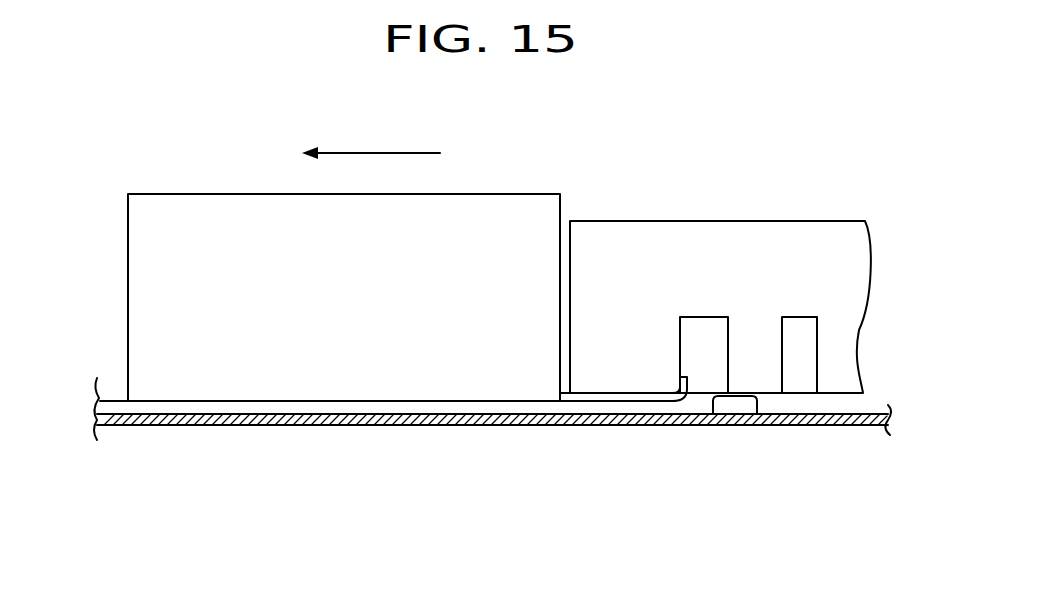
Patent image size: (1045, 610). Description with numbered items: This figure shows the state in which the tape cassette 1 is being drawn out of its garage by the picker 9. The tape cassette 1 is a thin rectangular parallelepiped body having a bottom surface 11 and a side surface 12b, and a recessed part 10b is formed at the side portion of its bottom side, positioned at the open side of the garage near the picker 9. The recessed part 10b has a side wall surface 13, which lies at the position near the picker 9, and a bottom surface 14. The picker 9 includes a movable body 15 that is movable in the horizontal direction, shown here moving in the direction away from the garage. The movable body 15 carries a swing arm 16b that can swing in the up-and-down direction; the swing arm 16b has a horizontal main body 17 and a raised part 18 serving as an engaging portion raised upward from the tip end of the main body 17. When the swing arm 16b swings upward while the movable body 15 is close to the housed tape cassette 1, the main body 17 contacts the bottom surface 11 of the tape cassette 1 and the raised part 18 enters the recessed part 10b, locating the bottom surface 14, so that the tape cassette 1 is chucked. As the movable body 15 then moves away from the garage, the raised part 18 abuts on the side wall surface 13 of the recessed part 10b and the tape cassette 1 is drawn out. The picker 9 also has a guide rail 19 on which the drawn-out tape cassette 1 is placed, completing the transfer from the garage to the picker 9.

The tape cassette 1 is at (842, 203).
The picker 9 is at (92, 355).
The recessed part 10b is at (704, 322).
The bottom surface 11 is at (835, 395).
The side surface 12b is at (782, 238).
The side wall surface 13 is at (682, 352).
The bottom surface 14 is at (715, 353).
The movable body 15 is at (217, 185).
The swing arm 16b is at (610, 410).
The main body 17 is at (651, 403).
The raised part 18 is at (694, 390).
The guide rail 19 is at (742, 405).